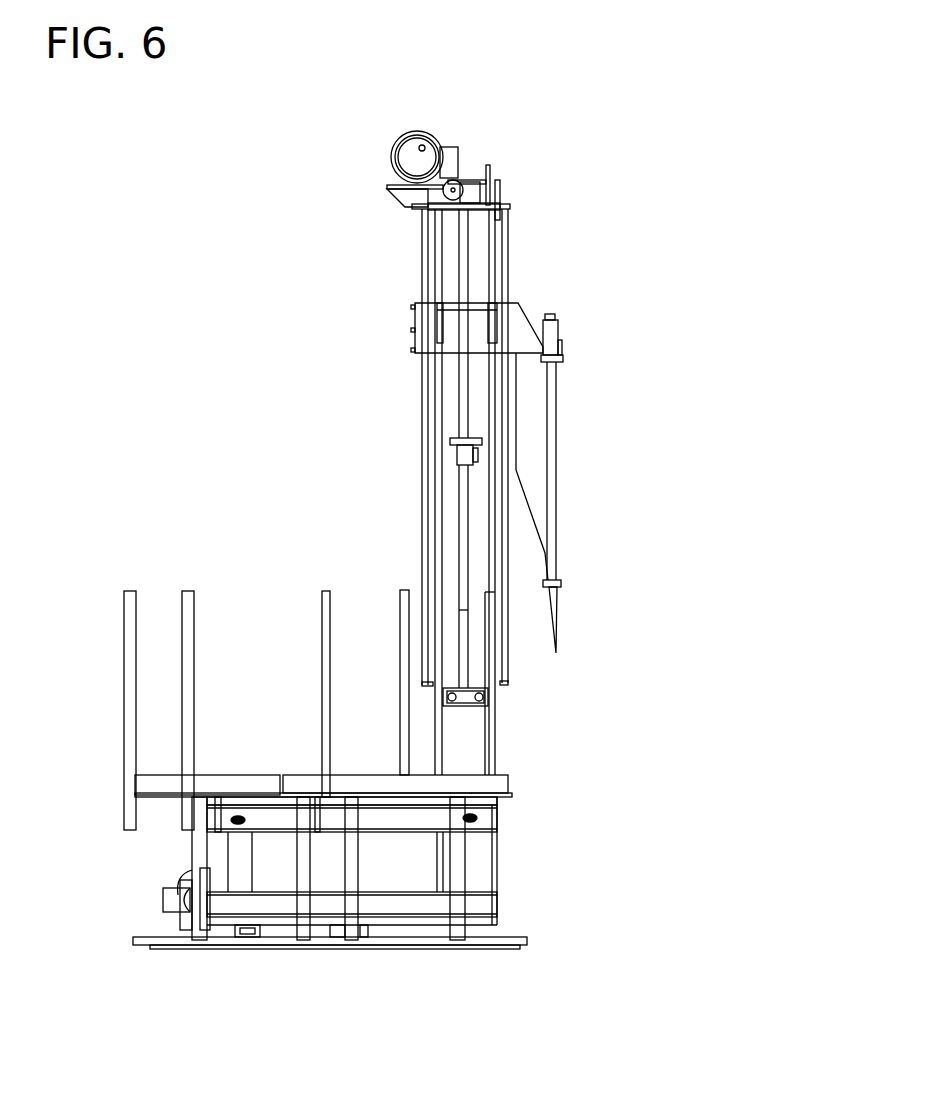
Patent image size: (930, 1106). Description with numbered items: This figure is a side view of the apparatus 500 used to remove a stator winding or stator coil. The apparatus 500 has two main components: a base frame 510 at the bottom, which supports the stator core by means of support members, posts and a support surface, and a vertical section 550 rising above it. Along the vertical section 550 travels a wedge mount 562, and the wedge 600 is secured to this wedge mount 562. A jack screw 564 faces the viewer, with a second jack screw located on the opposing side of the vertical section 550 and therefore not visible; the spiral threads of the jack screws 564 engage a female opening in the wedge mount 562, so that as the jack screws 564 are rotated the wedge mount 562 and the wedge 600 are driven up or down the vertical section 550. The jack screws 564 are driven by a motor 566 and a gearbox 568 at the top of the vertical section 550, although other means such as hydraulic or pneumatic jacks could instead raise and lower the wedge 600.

The apparatus 500 is at (250, 263).
The base frame 510 is at (508, 860).
The vertical section 550 is at (562, 287).
The wedge mount 562 is at (425, 327).
The jack screw 564 is at (465, 490).
The motor 566 is at (412, 158).
The gearbox 568 is at (472, 188).
The wedge 600 is at (532, 407).